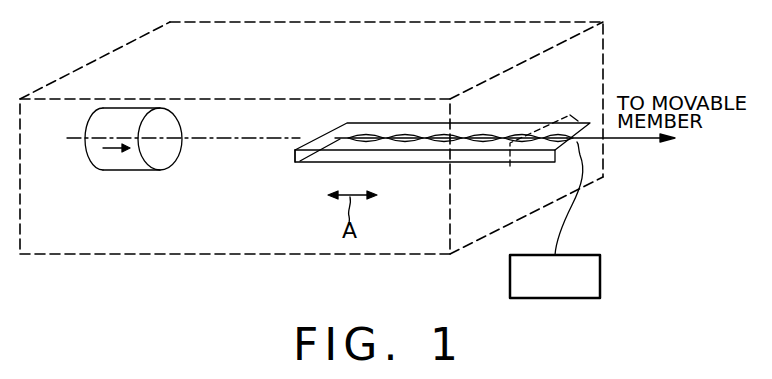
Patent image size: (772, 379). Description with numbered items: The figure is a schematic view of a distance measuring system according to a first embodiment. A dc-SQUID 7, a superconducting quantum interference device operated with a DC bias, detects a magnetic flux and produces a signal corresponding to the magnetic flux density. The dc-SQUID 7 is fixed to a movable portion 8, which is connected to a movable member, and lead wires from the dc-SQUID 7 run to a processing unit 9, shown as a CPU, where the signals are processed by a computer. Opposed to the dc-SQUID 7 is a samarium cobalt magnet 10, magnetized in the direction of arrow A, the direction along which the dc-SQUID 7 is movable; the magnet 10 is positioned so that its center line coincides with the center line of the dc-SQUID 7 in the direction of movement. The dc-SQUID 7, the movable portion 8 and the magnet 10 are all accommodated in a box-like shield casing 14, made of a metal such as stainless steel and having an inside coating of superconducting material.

The dc-SQUID 7 is at (295, 151).
The movable portion 8 is at (414, 162).
The processing unit 9 is at (600, 283).
The samarium cobalt magnet 10 is at (128, 170).
The shield casing 14 is at (193, 255).